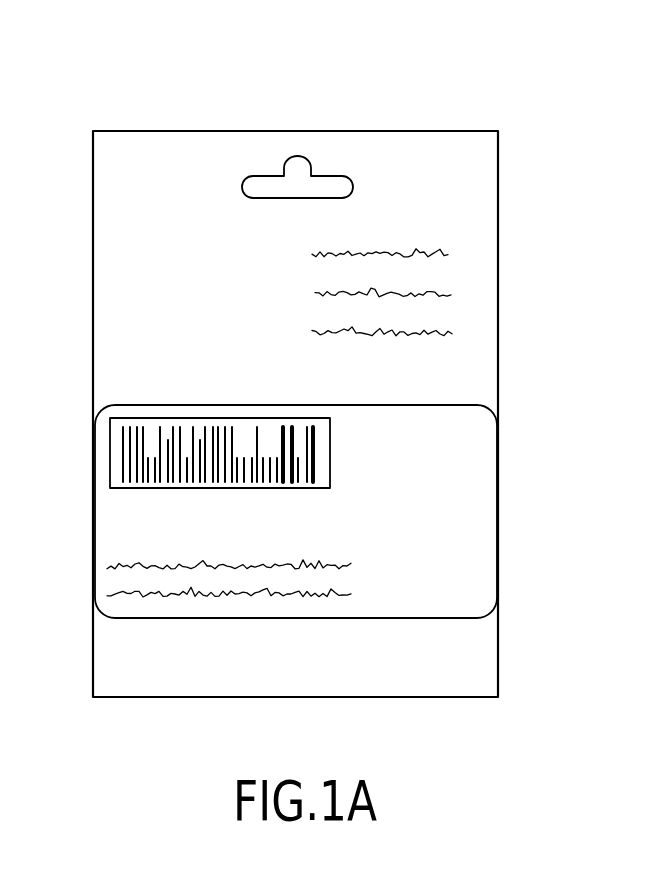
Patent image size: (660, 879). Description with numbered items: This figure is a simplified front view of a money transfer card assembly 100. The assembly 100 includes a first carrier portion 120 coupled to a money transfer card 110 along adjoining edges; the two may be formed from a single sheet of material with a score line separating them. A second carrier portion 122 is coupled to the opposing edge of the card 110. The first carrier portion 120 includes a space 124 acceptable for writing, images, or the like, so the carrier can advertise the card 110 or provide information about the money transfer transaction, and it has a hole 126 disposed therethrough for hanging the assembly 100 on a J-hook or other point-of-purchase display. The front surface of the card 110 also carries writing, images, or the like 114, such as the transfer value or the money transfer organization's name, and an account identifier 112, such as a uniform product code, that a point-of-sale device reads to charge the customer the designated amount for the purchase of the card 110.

The money transfer card assembly 100 is at (564, 131).
The money transfer card 110 is at (483, 503).
The account identifier 112 is at (330, 445).
The writing, images, or the like 114 is at (362, 552).
The first carrier portion 120 is at (483, 275).
The second carrier portion 122 is at (482, 663).
The space 124 is at (279, 240).
The hole 126 is at (322, 185).